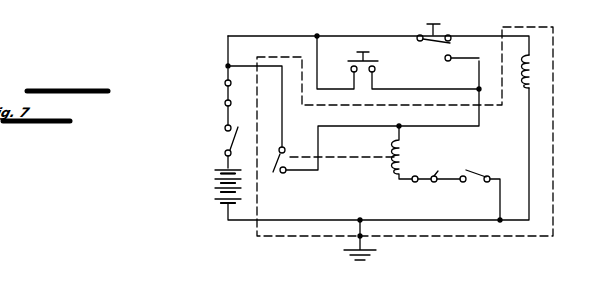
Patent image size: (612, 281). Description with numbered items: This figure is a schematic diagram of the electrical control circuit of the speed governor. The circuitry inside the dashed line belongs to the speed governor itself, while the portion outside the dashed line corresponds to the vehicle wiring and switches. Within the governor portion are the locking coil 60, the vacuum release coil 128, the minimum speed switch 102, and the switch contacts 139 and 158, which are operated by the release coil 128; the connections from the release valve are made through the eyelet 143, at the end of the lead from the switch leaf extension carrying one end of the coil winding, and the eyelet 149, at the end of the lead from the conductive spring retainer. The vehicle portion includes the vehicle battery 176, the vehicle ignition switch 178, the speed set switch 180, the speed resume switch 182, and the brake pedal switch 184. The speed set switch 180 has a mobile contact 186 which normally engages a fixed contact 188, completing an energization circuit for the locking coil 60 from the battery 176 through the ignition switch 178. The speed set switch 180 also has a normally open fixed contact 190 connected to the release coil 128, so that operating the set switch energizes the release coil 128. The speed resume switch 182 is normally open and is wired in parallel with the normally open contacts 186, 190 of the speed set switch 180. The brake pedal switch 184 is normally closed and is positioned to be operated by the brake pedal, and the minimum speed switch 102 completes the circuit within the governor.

The eyelet 149 is at (228, 66).
The vehicle ignition switch 178 is at (224, 130).
The vehicle battery 176 is at (214, 172).
The switch contact 158 is at (272, 168).
The switch contact 139 is at (288, 175).
The speed resume switch 182 is at (380, 68).
The eyelet 143 is at (479, 89).
The mobile contact 186 is at (425, 42).
The speed set switch 180 is at (424, 30).
The fixed contact 188 is at (450, 34).
The fixed contact 190 is at (446, 60).
The locking coil 60 is at (526, 86).
The solenoid coil 128 is at (402, 147).
The brake pedal switch 184 is at (427, 182).
The minimum speed switch 102 is at (486, 172).